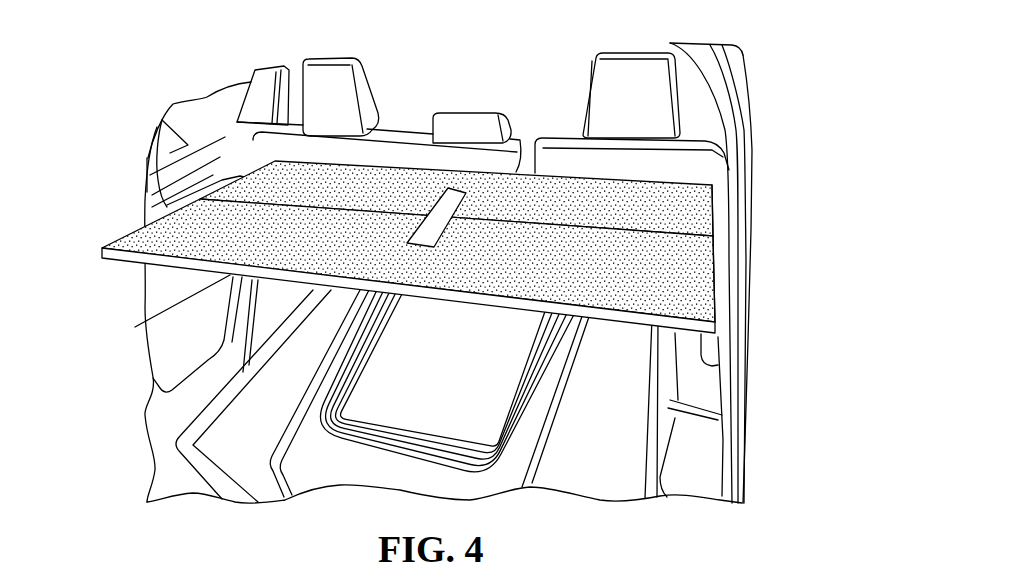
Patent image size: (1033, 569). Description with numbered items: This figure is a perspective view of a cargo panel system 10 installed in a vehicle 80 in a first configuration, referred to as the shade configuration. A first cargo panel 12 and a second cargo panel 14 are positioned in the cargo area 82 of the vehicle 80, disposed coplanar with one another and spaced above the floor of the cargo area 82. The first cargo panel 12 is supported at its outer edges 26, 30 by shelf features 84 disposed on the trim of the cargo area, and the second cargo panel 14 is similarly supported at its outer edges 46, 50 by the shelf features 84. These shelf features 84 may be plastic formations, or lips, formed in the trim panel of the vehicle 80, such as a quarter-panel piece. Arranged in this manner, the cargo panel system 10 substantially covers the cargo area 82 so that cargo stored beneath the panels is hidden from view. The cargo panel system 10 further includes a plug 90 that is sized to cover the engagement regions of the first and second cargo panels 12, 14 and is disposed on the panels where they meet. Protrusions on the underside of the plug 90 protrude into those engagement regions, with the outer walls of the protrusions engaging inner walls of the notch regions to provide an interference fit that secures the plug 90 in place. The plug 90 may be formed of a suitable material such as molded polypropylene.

The cargo panel system 10 is at (565, 48).
The first cargo panel 12 is at (693, 285).
The second cargo panel 14 is at (697, 208).
The outer edge 26 is at (713, 312).
The outer edge 30 is at (438, 207).
The outer edge 46 is at (713, 218).
The outer edge 50 is at (262, 178).
The vehicle 80 is at (738, 74).
The cargo area 82 is at (282, 298).
The shelf features 84 is at (150, 158).
The plug 90 is at (450, 190).